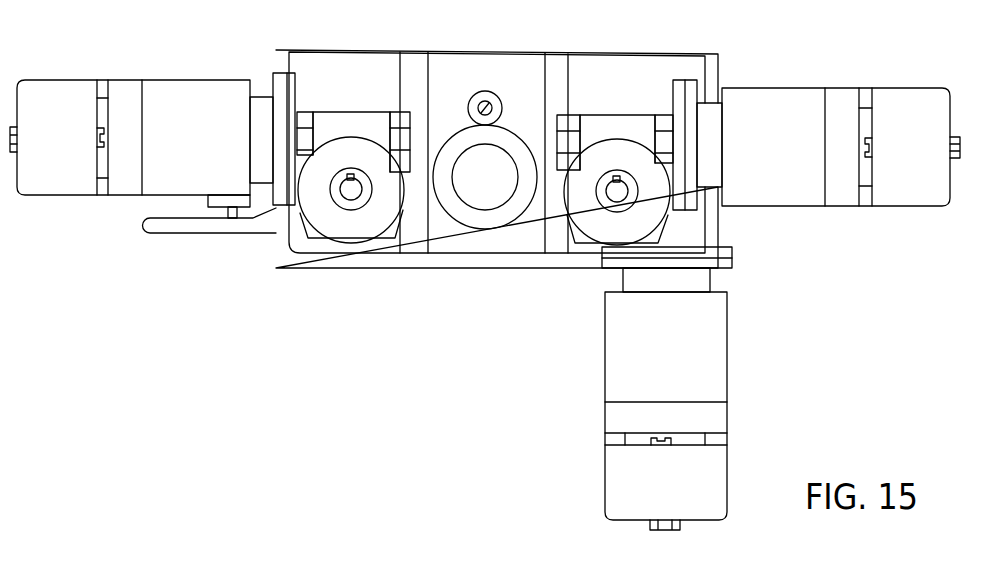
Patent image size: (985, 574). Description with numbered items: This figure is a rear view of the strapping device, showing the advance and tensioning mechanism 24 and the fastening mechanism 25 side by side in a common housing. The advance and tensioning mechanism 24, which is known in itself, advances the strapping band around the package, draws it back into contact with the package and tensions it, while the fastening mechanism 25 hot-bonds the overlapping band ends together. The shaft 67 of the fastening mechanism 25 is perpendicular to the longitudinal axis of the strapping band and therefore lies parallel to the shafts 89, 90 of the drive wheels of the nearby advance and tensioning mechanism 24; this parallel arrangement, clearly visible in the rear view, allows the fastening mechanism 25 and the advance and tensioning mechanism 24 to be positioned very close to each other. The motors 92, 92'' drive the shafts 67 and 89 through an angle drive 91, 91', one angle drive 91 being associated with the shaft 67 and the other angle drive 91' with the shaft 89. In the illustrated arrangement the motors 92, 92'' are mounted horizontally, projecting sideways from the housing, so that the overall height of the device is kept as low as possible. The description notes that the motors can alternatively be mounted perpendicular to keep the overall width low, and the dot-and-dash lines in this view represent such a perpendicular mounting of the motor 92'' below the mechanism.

The advance and tensioning mechanism 24 is at (626, 70).
The fastening mechanism 25 is at (371, 72).
The shaft 67 is at (351, 198).
The shaft 89 is at (618, 200).
The shaft 90 is at (485, 106).
The angle drive 91 is at (353, 122).
The angle drive 91' is at (615, 124).
The motor 92 is at (130, 122).
The motor 92'' is at (782, 294).